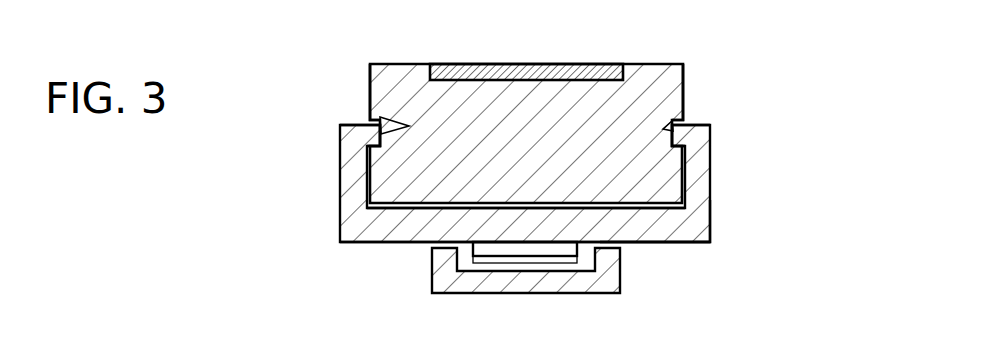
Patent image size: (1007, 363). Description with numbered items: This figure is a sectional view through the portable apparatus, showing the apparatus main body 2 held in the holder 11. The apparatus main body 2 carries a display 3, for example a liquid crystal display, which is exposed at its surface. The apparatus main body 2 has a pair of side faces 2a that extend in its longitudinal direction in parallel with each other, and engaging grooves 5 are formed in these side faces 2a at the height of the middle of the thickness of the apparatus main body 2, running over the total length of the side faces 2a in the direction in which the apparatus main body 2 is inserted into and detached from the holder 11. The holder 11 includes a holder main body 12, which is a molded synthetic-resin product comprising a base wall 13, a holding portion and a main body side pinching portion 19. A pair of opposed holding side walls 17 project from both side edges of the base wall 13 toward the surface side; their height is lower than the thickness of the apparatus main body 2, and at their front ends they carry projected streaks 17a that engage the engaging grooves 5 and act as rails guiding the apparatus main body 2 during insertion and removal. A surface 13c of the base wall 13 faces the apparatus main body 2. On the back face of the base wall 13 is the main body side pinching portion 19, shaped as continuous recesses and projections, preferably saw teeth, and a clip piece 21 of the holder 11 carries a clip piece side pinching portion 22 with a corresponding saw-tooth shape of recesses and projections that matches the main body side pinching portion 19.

The apparatus main body 2 is at (685, 75).
The side faces 2a is at (370, 86).
The display 3 is at (527, 72).
The engaging grooves 5 is at (405, 125).
The holder 11 is at (330, 246).
The holder main body 12 is at (710, 236).
The base wall 13 is at (640, 228).
The surface of the base wall 13c is at (427, 208).
The holding side walls 17 is at (356, 190).
The projected streak 17a is at (380, 126).
The main body side pinching portion 19 is at (492, 250).
The clip piece 21 is at (558, 293).
The clip piece side pinching portion 22 is at (527, 262).